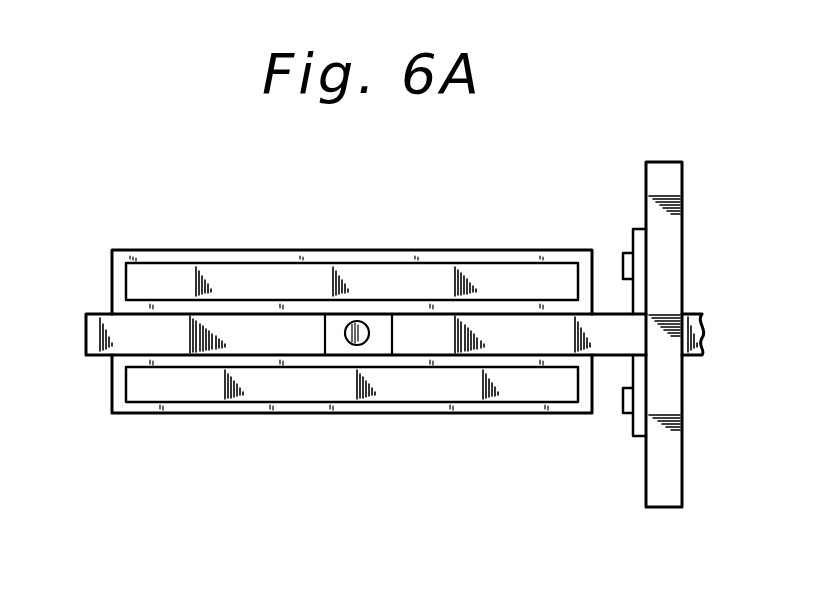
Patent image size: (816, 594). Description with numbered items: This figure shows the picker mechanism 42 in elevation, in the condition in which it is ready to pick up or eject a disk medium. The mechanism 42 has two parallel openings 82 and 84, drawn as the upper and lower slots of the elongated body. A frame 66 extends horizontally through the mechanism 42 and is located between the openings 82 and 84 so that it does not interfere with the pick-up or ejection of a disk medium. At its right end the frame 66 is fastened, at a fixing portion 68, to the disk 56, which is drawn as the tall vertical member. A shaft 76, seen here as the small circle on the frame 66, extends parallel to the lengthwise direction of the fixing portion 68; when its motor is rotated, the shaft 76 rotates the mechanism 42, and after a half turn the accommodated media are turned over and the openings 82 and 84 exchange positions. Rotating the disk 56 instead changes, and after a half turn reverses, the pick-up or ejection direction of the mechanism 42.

The picker mechanism 42 is at (468, 413).
The disk 56 is at (665, 253).
The frame 66 is at (94, 360).
The fixing portion 68 is at (640, 241).
The shaft 76 is at (364, 322).
The opening 82 is at (218, 385).
The opening 84 is at (245, 284).